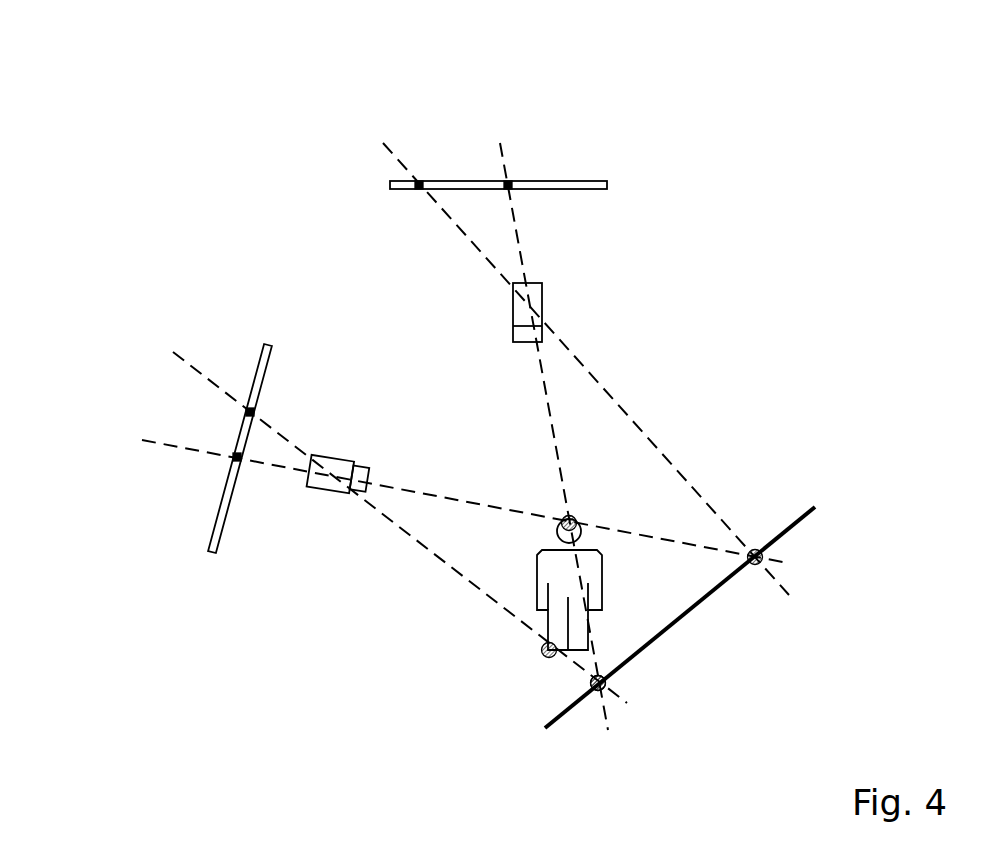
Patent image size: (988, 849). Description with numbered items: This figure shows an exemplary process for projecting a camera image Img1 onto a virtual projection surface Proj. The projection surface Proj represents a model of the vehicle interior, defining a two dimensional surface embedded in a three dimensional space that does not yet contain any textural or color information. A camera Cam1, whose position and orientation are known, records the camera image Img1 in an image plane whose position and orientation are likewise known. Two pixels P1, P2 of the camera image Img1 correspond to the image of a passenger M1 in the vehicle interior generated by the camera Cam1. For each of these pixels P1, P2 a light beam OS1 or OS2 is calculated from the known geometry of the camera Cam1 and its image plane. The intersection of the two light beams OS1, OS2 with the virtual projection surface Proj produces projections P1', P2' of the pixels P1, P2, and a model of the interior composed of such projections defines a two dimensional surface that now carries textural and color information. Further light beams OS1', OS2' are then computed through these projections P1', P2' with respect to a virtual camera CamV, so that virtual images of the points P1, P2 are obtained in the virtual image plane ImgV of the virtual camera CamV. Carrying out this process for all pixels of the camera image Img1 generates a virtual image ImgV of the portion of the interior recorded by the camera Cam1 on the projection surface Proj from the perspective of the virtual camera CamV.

The virtual image plane ImgV is at (607, 184).
The virtual camera CamV is at (542, 300).
The camera image Img1 is at (265, 348).
The pixel P1 is at (149, 495).
The pixel P2 is at (155, 391).
The camera Cam1 is at (334, 490).
The passenger M1 is at (545, 570).
The virtual projection surface Proj is at (788, 523).
The projection of pixel P1 P1' is at (826, 465).
The projection of pixel P2 P2' is at (747, 662).
The light beam OS1 is at (428, 586).
The light beam OS1' is at (560, 481).
The light beam OS2 is at (531, 501).
The light beam OS2' is at (655, 374).